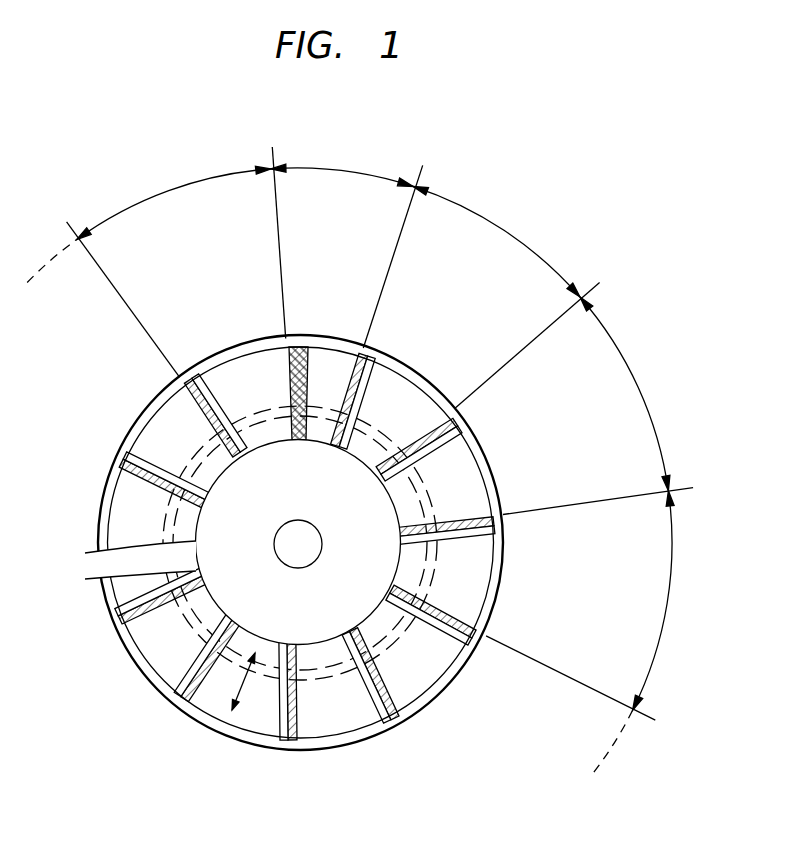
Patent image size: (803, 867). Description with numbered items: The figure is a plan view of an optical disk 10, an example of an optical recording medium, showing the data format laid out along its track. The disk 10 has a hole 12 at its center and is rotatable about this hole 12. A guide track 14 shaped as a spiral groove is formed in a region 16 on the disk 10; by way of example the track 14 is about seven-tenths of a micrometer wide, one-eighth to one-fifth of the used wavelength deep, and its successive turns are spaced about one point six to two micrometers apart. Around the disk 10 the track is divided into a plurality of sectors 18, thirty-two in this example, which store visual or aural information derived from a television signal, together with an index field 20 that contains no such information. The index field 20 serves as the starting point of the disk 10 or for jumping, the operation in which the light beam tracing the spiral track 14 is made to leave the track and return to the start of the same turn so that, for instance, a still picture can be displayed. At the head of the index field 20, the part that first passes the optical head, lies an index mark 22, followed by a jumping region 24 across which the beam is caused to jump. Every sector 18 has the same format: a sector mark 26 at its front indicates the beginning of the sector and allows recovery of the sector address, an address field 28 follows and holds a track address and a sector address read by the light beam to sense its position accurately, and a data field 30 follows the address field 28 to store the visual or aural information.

The optical disk 10 is at (319, 752).
The hole 12 is at (297, 553).
The guide track 14 is at (337, 673).
The region 16 is at (240, 712).
The sectors 18 is at (176, 187).
The index field 20 is at (343, 168).
The index mark 22 is at (306, 347).
The jumping region 24 is at (333, 370).
The sector mark 26 is at (186, 376).
The address field 28 is at (199, 376).
The data field 30 is at (253, 376).